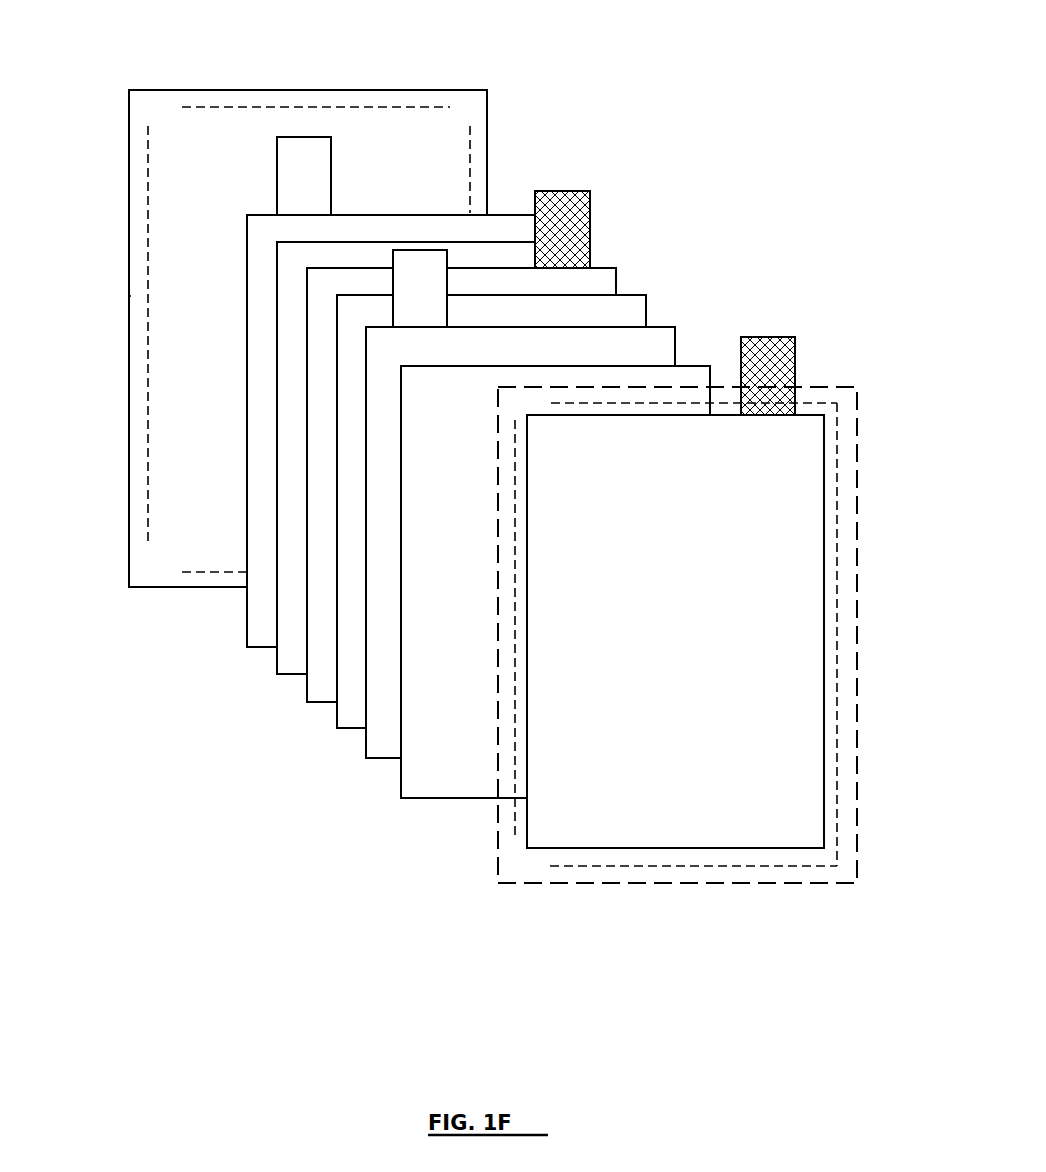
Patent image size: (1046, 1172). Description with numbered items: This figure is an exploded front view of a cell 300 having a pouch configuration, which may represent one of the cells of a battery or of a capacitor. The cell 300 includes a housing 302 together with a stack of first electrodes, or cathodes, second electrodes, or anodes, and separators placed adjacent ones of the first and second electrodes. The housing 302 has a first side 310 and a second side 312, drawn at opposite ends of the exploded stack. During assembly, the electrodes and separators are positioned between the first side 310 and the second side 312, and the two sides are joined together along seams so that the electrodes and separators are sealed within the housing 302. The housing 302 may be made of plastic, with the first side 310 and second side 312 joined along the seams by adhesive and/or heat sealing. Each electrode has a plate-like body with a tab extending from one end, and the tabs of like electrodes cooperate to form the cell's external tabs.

The cell 300 is at (776, 88).
The housing 302 is at (175, 86).
The first side 310 is at (857, 658).
The second side 312 is at (129, 296).